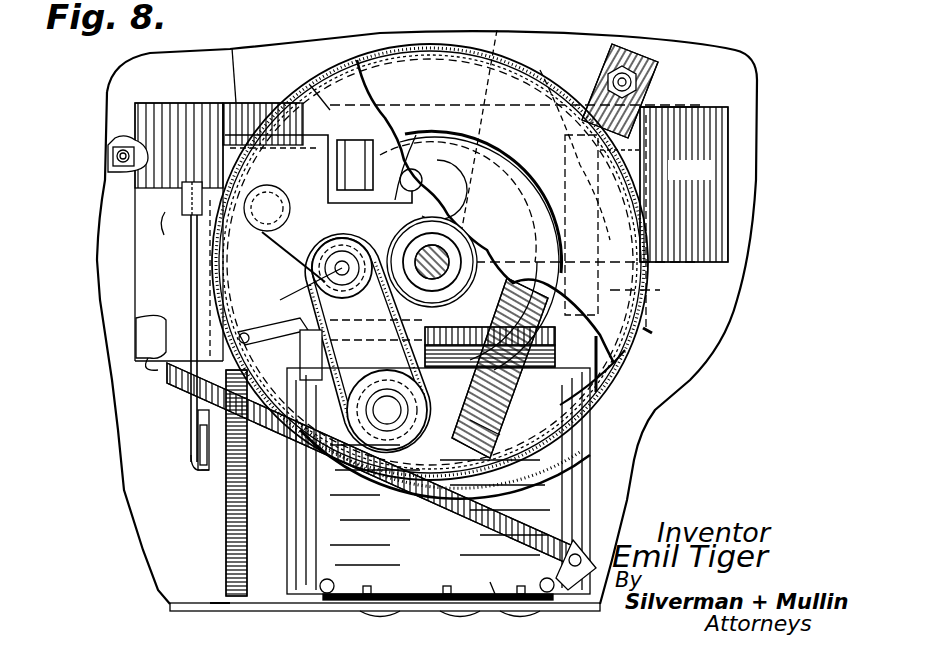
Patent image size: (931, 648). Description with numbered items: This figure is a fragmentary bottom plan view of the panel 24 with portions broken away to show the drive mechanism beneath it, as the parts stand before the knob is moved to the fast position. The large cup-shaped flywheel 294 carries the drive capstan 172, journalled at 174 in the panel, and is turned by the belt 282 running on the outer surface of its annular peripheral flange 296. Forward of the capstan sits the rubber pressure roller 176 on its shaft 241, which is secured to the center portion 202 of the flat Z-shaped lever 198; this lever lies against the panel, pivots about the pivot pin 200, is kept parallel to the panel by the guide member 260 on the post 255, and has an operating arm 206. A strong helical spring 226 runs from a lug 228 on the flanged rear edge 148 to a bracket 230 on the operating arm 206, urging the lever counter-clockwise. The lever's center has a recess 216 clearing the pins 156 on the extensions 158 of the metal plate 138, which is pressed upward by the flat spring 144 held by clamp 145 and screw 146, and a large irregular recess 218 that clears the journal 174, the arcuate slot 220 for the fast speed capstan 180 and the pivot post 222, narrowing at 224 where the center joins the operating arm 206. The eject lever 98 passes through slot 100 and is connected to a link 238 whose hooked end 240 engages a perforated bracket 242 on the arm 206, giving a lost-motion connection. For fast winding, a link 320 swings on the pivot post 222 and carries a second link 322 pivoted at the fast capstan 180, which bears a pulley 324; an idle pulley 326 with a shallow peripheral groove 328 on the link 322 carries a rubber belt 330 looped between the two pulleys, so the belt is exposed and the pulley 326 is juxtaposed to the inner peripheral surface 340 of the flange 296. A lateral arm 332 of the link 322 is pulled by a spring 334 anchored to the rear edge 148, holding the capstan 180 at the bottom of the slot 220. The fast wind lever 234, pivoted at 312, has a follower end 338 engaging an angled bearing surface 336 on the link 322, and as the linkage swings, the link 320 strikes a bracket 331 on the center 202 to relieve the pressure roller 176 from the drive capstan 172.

The panel 24 is at (742, 197).
The lever 98 is at (191, 462).
The slot 100 is at (198, 420).
The metal plate 138 is at (615, 395).
The flat spring 144 is at (664, 438).
The clamp 145 is at (494, 575).
The screw 146 is at (448, 612).
The flanged rear edge 148 is at (320, 608).
The pins 156 is at (330, 118).
The extensions 158 is at (298, 292).
The drive capstan 172 is at (438, 250).
The journal 174 is at (452, 266).
The pressure roller 176 is at (534, 127).
The fast speed capstan 180 is at (300, 302).
The Z-shaped lever 198 is at (703, 105).
The pivot pin 200 is at (640, 150).
The center portion 202 is at (684, 184).
The operating arm 206 is at (140, 186).
The slot or recess 216 is at (515, 208).
The recess 218 is at (438, 170).
The slot 220 is at (310, 270).
The pivot post 222 is at (268, 196).
The narrowed portion 224 is at (236, 100).
The helical spring 226 is at (460, 518).
The lug 228 is at (578, 592).
The bracket 230 is at (140, 370).
The fast wind lever 234 is at (612, 62).
The link 238 is at (191, 280).
The hooked end 240 is at (186, 216).
The shaft 241 is at (416, 135).
The perforated bracket 242 is at (182, 198).
The post 255 is at (113, 156).
The guide member 260 is at (135, 140).
The belt 282 is at (652, 310).
The flywheel 294 is at (648, 332).
The annular peripheral flange 296 is at (318, 92).
The pivot 312 is at (635, 68).
The link 320 is at (270, 246).
The link 322 is at (312, 372).
The pulley 324 is at (405, 185).
The idle pulley 326 is at (372, 450).
The peripheral groove 328 is at (380, 378).
The rubber belt 330 is at (410, 305).
The bracket 331 is at (352, 125).
The lateral arm 332 is at (273, 332).
The spring 334 is at (227, 538).
The bearing surface 336 is at (504, 378).
The follower end 338 is at (498, 416).
The inner peripheral surface 340 is at (398, 488).